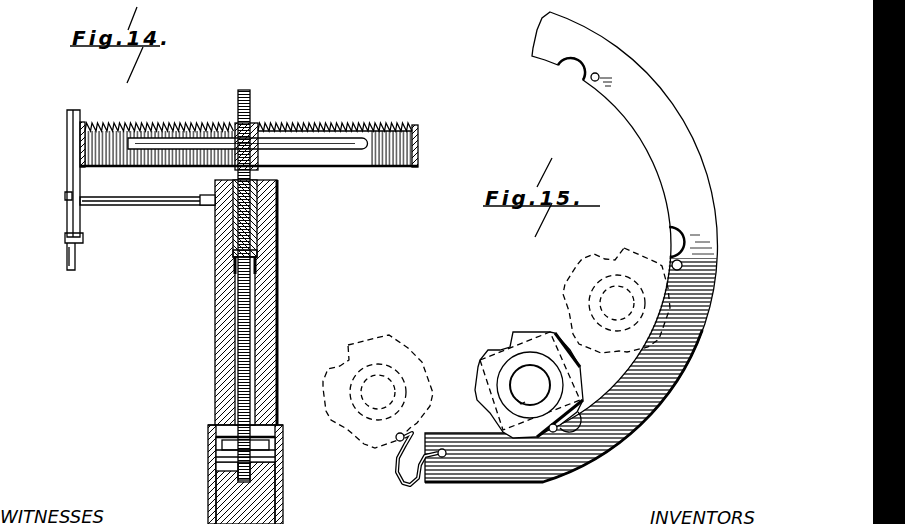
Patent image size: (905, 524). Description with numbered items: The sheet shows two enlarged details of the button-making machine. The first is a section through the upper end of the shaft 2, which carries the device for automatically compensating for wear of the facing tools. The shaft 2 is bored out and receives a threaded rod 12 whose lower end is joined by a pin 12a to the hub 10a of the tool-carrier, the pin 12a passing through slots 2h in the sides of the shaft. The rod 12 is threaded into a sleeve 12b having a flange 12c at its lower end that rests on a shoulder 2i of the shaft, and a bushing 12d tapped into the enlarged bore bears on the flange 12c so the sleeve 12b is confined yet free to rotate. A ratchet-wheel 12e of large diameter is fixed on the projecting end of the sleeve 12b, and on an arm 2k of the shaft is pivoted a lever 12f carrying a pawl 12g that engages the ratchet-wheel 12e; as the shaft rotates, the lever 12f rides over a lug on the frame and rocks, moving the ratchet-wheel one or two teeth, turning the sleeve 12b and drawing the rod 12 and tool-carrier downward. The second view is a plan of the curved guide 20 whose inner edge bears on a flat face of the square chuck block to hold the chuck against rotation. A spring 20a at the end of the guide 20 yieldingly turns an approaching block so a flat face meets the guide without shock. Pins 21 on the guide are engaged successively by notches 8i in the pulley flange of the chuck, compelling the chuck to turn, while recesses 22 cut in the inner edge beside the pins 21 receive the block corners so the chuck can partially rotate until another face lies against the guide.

In FIG. 14, the shaft 2 is at (277, 310).
In FIG. 14, the slots 2h is at (225, 468).
In FIG. 14, the shoulder 2i is at (255, 262).
In FIG. 14, the arm 2k is at (163, 205).
In FIG. 15, the notches 8i is at (640, 260).
In FIG. 14, the hub 10a is at (279, 497).
In FIG. 14, the threaded rod 12 is at (246, 350).
In FIG. 14, the pin 12a is at (266, 453).
In FIG. 14, the sleeve 12b is at (260, 123).
In FIG. 14, the flange 12c is at (260, 254).
In FIG. 14, the bushing 12d is at (276, 185).
In FIG. 14, the ratchet-wheel 12e is at (395, 127).
In FIG. 14, the lever 12f is at (67, 180).
In FIG. 14, the pawl 12g is at (81, 122).
In FIG. 15, the curved guide 20 is at (692, 160).
In FIG. 15, the spring 20a is at (400, 486).
In FIG. 15, the pins 21 is at (683, 263).
In FIG. 15, the recesses 22 is at (580, 57).